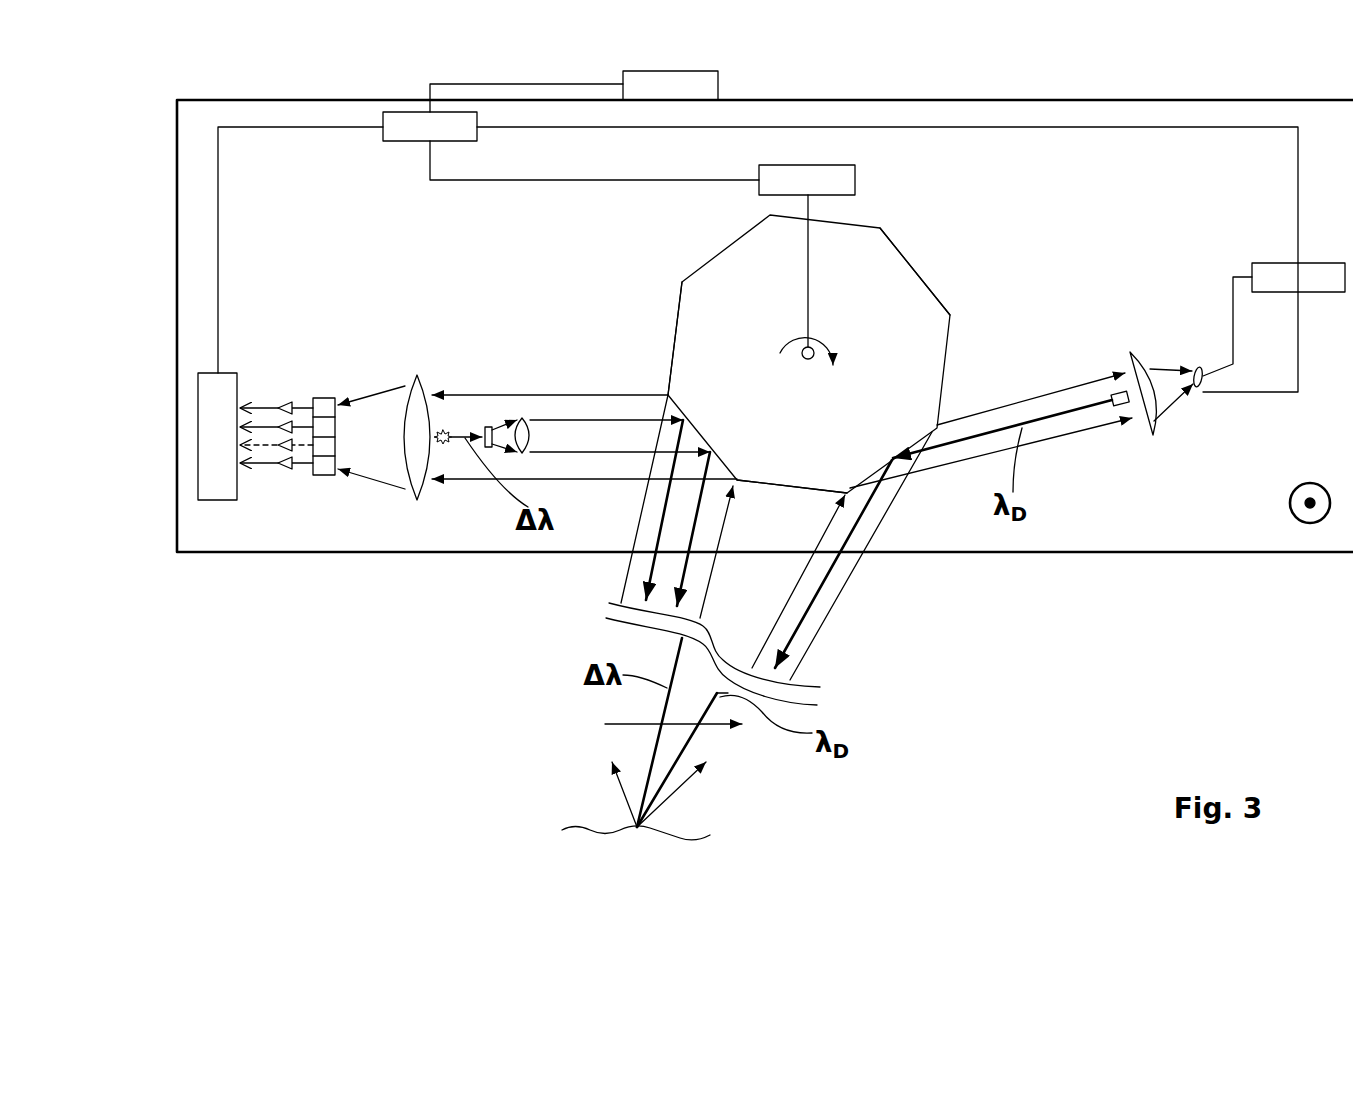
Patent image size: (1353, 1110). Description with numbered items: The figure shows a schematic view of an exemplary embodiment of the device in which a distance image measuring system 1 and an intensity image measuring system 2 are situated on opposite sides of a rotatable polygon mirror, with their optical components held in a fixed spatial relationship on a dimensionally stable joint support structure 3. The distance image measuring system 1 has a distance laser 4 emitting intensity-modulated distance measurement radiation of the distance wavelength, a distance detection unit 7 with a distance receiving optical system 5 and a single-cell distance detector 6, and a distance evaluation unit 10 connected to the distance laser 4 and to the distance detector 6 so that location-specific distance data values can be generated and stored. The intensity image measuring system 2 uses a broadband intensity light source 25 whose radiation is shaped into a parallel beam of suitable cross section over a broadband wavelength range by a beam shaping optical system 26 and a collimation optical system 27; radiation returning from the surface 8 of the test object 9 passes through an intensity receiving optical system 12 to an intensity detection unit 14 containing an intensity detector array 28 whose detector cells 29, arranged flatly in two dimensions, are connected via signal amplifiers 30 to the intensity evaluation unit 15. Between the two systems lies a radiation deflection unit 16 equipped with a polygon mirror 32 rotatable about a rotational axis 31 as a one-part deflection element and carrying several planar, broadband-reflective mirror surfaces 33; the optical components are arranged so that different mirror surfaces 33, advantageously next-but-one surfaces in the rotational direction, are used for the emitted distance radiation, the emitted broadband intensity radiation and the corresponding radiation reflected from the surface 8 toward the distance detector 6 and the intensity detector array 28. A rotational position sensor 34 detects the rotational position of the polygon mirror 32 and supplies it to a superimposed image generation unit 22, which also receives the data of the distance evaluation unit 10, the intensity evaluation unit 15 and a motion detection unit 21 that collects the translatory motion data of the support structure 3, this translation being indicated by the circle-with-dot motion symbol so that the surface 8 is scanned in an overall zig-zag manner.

The distance image measuring system 1 is at (1188, 235).
The intensity image measuring system 2 is at (503, 290).
The support structure 3 is at (1178, 98).
The distance laser 4 is at (1112, 405).
The distance receiving optical system 5 is at (1132, 350).
The distance detector 6 is at (1200, 366).
The distance detection unit 7 is at (1152, 312).
The surface 8 is at (697, 828).
The test object 9 is at (588, 832).
The distance evaluation unit 10 is at (1272, 275).
The intensity receiving optical system 12 is at (418, 478).
The intensity detection unit 14 is at (390, 335).
The intensity evaluation unit 15 is at (212, 490).
The radiation deflection unit 16 is at (980, 238).
The motion detection unit 21 is at (703, 88).
The superimposed image generation unit 22 is at (407, 132).
The broadband intensity light source 25 is at (445, 430).
The beam shaping optical system 26 is at (490, 426).
The collimation optical system 27 is at (525, 435).
The intensity detector array 28 is at (331, 394).
The detector cells 29 is at (322, 405).
The signal amplifiers 30 is at (283, 404).
The rotational axis 31 is at (815, 348).
The polygon mirror 32 is at (735, 262).
The mirror surfaces 33 is at (905, 251).
The rotational position sensor 34 is at (778, 185).